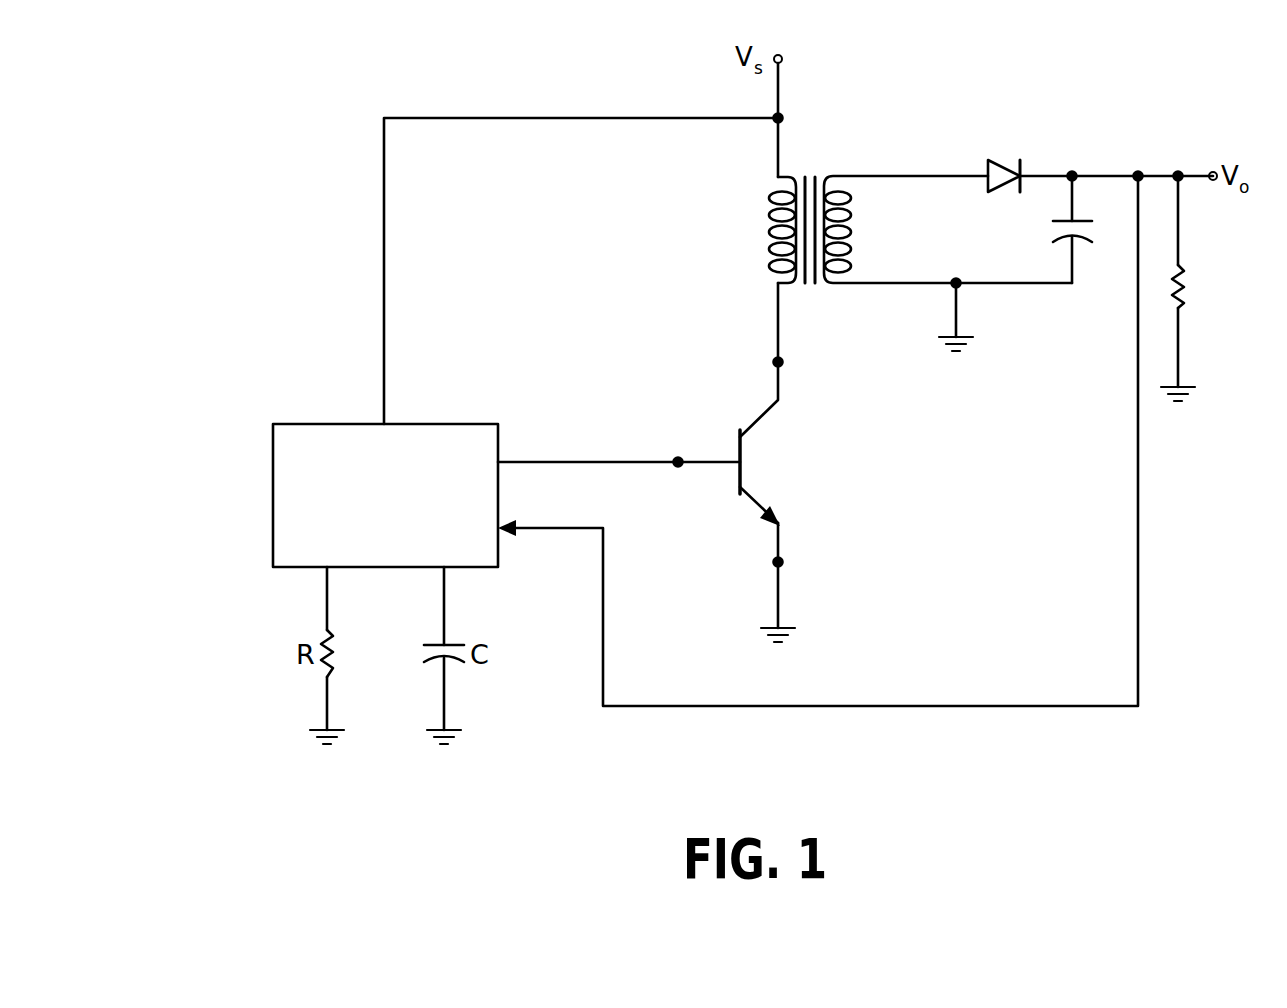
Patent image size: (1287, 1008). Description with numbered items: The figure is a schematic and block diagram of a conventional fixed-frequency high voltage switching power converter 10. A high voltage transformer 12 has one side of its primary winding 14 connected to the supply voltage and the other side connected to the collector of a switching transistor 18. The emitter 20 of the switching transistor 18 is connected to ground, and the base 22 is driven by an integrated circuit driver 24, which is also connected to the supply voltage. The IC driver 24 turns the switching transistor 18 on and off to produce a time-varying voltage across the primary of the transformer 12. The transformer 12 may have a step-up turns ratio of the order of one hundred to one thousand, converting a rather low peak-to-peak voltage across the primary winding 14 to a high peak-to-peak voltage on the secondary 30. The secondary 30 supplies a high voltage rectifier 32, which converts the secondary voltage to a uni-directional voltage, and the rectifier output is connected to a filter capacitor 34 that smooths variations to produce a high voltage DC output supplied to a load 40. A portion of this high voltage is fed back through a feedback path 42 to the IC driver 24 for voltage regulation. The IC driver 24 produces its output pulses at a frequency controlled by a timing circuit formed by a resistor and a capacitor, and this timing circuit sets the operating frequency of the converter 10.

The power converter 10 is at (305, 306).
The high voltage transformer 12 is at (818, 158).
The primary winding 14 is at (768, 229).
The switching transistor 18 is at (797, 457).
The emitter 20 is at (783, 562).
The base 22 is at (678, 468).
The integrated circuit driver 24 is at (290, 487).
The secondary winding 30 is at (853, 232).
The high voltage rectifier 32 is at (1000, 162).
The capacitor 34 is at (1055, 224).
The load 40 is at (1185, 285).
The feedback path 42 is at (1000, 708).